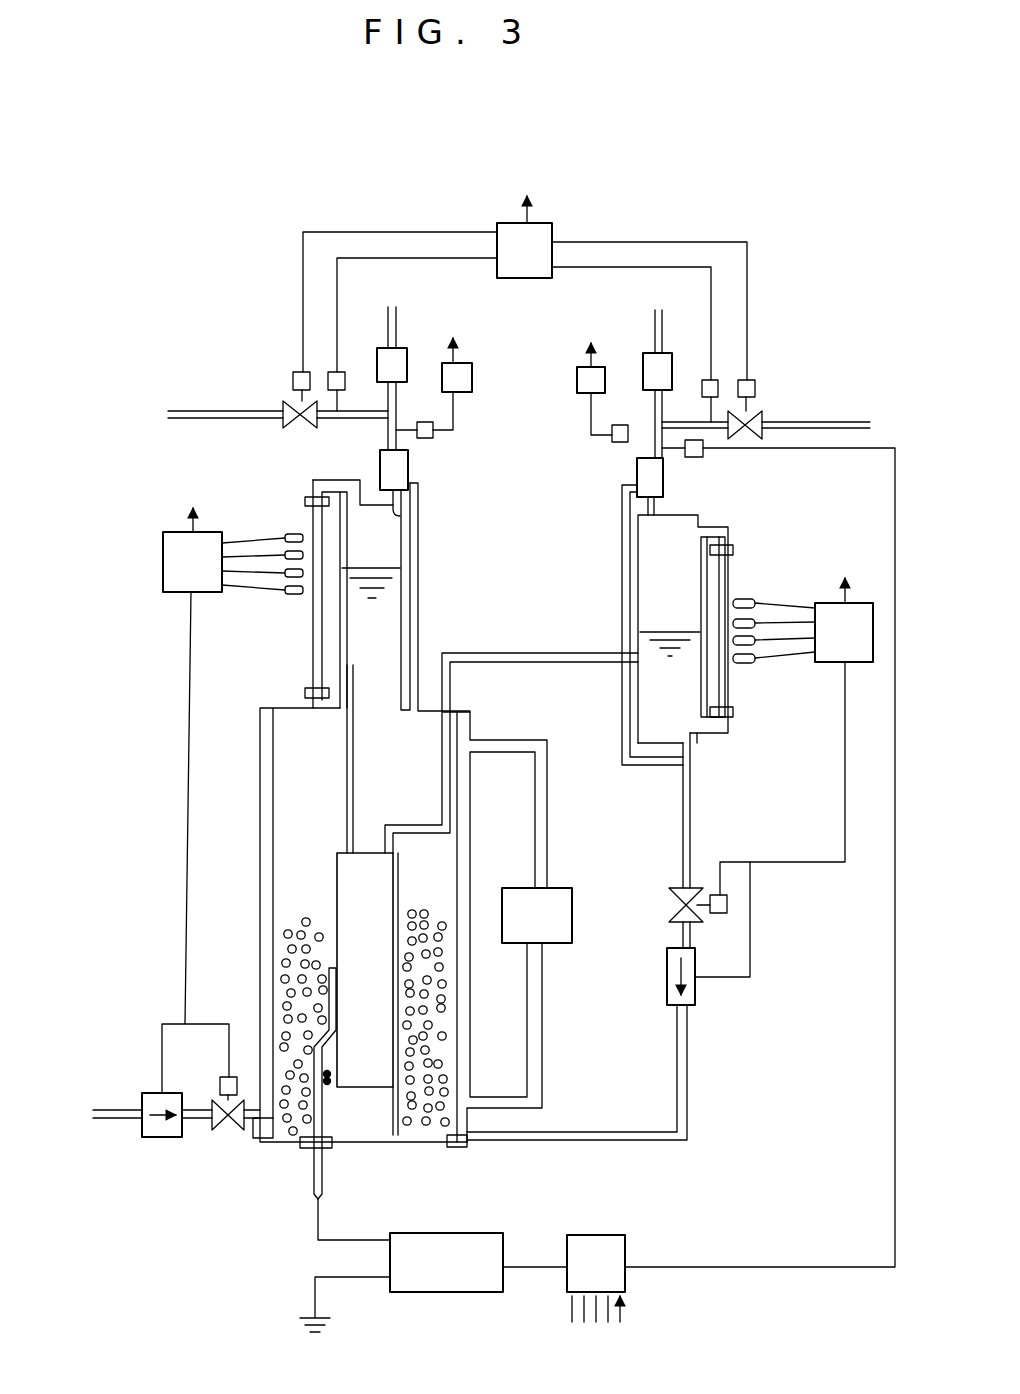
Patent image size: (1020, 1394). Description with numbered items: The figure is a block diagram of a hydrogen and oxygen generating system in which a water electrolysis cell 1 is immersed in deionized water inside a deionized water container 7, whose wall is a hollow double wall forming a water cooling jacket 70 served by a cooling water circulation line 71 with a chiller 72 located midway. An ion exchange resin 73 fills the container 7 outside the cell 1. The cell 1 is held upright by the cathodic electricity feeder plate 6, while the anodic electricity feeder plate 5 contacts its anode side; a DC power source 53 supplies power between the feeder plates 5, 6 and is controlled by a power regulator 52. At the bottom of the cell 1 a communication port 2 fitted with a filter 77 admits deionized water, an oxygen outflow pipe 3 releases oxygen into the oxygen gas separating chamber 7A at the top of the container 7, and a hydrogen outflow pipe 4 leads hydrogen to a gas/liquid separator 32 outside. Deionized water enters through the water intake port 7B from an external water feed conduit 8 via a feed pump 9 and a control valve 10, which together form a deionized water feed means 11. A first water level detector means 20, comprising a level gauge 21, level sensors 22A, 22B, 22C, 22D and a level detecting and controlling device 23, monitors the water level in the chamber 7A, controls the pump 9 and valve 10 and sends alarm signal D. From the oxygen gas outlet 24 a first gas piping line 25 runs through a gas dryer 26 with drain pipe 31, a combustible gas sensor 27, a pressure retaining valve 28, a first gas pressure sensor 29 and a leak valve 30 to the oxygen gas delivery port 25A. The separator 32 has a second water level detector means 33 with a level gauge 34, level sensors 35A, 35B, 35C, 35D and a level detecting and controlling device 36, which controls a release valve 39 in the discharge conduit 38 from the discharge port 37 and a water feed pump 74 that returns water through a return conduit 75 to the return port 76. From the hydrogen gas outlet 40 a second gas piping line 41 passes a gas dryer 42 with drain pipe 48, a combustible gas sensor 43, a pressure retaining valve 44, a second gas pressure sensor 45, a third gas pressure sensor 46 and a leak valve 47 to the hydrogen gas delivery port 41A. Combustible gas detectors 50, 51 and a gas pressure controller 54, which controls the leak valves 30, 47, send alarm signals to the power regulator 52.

The water electrolysis cell 1 is at (380, 895).
The communication port 2 is at (334, 1076).
The oxygen outflow pipe 3 is at (346, 777).
The hydrogen outflow pipe 4 is at (526, 653).
The anodic electricity feeder plate 5 is at (313, 1043).
The cathodic electricity feeder plate 6 is at (394, 1136).
The deionized water container 7 is at (458, 988).
The oxygen gas separating chamber 7A is at (405, 604).
The water intake port 7B is at (264, 1140).
The external water feed conduit 8 is at (95, 1115).
The feed pump 9 is at (161, 1138).
The control valve 10 is at (229, 1131).
The deionized water feed means 11 is at (128, 1144).
The first water level detector means 20 is at (168, 517).
The level gauge 21 is at (313, 661).
The level sensor 22A is at (293, 532).
The level sensor 22B is at (285, 540).
The level sensor 22C is at (286, 576).
The level sensor 22D is at (292, 596).
The level detecting and controlling device 23 is at (170, 572).
The oxygen gas outlet 24 is at (410, 513).
The first gas piping line 25 is at (388, 437).
The oxygen gas delivery port 25A is at (389, 314).
The gas dryer 26 is at (408, 470).
The combustible gas sensor 27 is at (433, 436).
The pressure retaining valve 28 is at (399, 353).
The first gas pressure sensor 29 is at (338, 370).
The leak valve 30 is at (288, 408).
The drain pipe 31 is at (418, 548).
The gas/liquid separator 32 is at (678, 529).
The second water level detector means 33 is at (861, 600).
The level gauge 34 is at (725, 557).
The level sensor 35A is at (742, 599).
The level sensor 35B is at (757, 618).
The level sensor 35C is at (757, 644).
The level sensor 35D is at (742, 664).
The level detecting and controlling device 36 is at (850, 647).
The discharge port 37 is at (700, 742).
The discharge conduit 38 is at (690, 820).
The release valve 39 is at (673, 893).
The hydrogen gas outlet 40 is at (656, 516).
The second gas piping line 41 is at (650, 448).
The hydrogen gas delivery port 41A is at (658, 312).
The gas dryer 42 is at (637, 470).
The combustible gas sensor 43 is at (620, 425).
The pressure retaining valve 44 is at (665, 359).
The second gas pressure sensor 45 is at (714, 380).
The third gas pressure sensor 46 is at (696, 457).
The leak valve 47 is at (763, 424).
The drain pipe 48 is at (622, 526).
The combustible gas detector 50 is at (480, 366).
The combustible gas detector 51 is at (578, 381).
The power regulator 52 is at (612, 1266).
The DC power source 53 is at (446, 1276).
The gas pressure controller 54 is at (550, 233).
The water cooling jacket 70 is at (471, 833).
The cooling water circulation line 71 is at (543, 1000).
The chiller 72 is at (572, 916).
The ion exchange resin 73 is at (436, 1031).
The water feed pump 74 is at (667, 990).
The return conduit 75 is at (604, 1141).
The return port 76 is at (447, 1148).
The filter 77 is at (329, 1086).